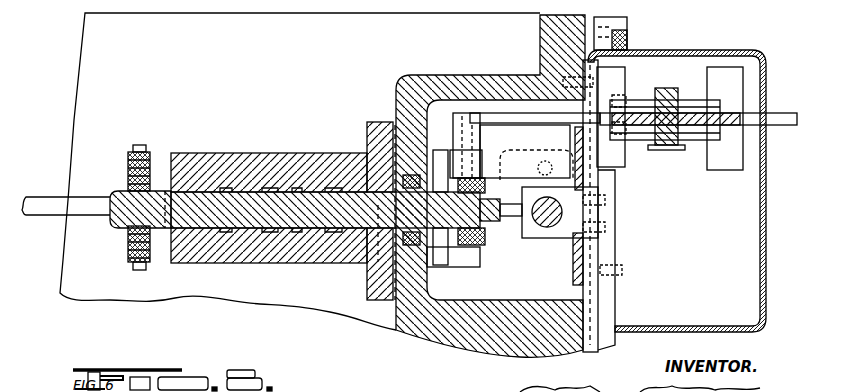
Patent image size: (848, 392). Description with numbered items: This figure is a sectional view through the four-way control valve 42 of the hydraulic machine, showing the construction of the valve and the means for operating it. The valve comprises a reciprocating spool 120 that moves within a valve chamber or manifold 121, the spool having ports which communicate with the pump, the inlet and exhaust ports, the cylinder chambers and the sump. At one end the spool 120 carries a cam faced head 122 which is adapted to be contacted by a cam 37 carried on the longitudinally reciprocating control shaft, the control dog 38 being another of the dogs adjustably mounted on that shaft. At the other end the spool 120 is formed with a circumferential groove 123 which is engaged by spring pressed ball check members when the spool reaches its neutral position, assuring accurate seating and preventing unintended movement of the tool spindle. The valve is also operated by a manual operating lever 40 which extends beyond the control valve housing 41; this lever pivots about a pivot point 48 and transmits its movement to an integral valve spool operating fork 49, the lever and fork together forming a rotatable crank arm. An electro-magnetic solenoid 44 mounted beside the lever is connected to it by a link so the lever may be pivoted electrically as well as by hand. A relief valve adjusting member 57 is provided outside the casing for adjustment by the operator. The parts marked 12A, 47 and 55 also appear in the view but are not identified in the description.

The relief valve adjusting member 57 is at (44, 198).
The lock nuts 12A is at (128, 180).
The circumferential groove 123 is at (172, 230).
The valve chamber 121 is at (305, 187).
The reciprocating spool 120 is at (282, 222).
The four-way control valve 42 is at (497, 240).
The valve spool operating fork 49 is at (487, 250).
The pivot point 48 is at (472, 160).
The cam 37 is at (494, 180).
The cam faced head 122 is at (500, 225).
The pin 55 is at (565, 205).
The control dog 38 is at (610, 278).
The electro-magnetic solenoid 44 is at (695, 158).
The manual operating lever 40 is at (787, 127).
The adjusting nut 47 is at (660, 152).
The control valve housing 41 is at (760, 214).